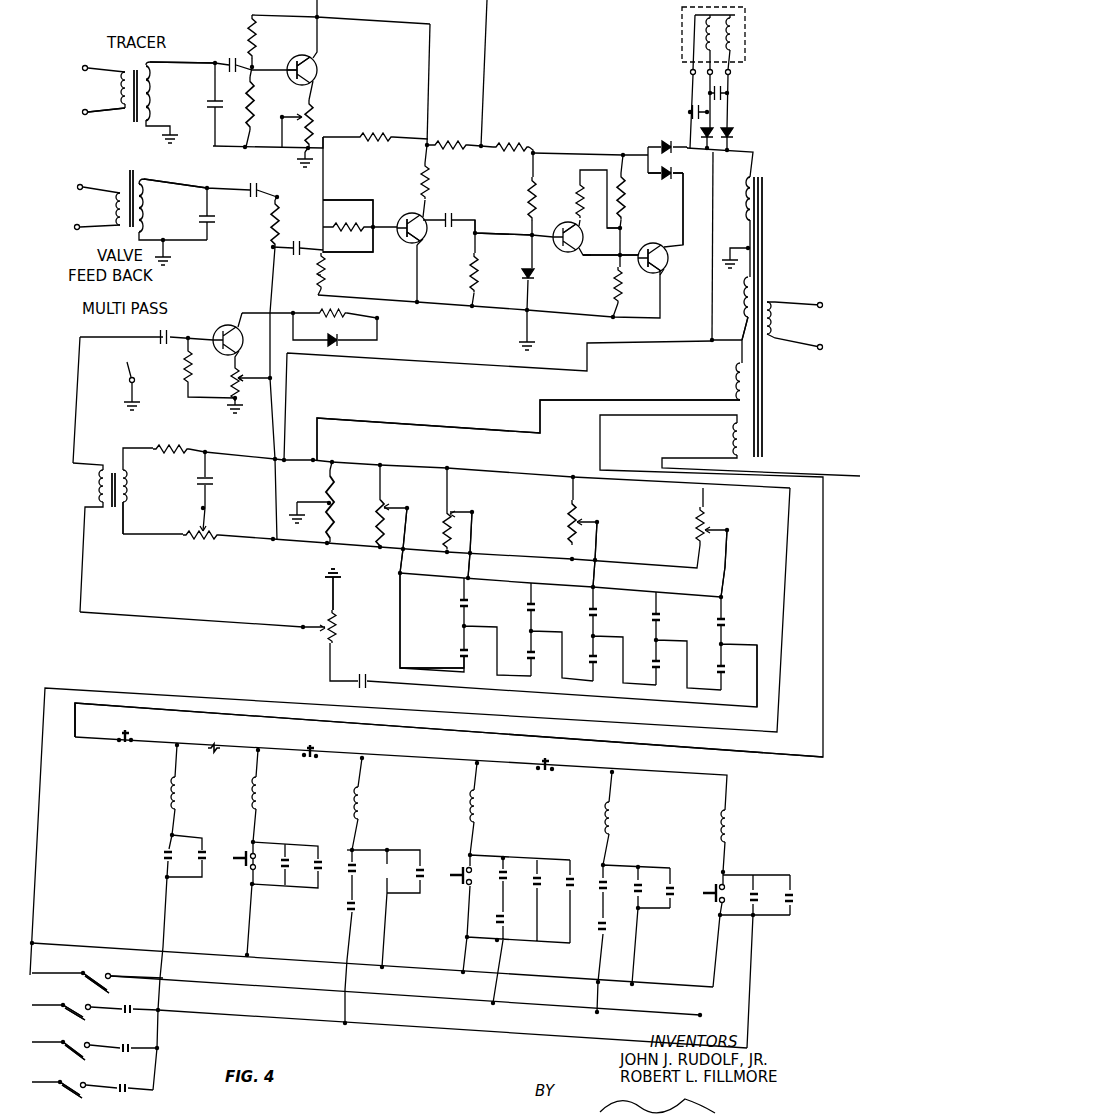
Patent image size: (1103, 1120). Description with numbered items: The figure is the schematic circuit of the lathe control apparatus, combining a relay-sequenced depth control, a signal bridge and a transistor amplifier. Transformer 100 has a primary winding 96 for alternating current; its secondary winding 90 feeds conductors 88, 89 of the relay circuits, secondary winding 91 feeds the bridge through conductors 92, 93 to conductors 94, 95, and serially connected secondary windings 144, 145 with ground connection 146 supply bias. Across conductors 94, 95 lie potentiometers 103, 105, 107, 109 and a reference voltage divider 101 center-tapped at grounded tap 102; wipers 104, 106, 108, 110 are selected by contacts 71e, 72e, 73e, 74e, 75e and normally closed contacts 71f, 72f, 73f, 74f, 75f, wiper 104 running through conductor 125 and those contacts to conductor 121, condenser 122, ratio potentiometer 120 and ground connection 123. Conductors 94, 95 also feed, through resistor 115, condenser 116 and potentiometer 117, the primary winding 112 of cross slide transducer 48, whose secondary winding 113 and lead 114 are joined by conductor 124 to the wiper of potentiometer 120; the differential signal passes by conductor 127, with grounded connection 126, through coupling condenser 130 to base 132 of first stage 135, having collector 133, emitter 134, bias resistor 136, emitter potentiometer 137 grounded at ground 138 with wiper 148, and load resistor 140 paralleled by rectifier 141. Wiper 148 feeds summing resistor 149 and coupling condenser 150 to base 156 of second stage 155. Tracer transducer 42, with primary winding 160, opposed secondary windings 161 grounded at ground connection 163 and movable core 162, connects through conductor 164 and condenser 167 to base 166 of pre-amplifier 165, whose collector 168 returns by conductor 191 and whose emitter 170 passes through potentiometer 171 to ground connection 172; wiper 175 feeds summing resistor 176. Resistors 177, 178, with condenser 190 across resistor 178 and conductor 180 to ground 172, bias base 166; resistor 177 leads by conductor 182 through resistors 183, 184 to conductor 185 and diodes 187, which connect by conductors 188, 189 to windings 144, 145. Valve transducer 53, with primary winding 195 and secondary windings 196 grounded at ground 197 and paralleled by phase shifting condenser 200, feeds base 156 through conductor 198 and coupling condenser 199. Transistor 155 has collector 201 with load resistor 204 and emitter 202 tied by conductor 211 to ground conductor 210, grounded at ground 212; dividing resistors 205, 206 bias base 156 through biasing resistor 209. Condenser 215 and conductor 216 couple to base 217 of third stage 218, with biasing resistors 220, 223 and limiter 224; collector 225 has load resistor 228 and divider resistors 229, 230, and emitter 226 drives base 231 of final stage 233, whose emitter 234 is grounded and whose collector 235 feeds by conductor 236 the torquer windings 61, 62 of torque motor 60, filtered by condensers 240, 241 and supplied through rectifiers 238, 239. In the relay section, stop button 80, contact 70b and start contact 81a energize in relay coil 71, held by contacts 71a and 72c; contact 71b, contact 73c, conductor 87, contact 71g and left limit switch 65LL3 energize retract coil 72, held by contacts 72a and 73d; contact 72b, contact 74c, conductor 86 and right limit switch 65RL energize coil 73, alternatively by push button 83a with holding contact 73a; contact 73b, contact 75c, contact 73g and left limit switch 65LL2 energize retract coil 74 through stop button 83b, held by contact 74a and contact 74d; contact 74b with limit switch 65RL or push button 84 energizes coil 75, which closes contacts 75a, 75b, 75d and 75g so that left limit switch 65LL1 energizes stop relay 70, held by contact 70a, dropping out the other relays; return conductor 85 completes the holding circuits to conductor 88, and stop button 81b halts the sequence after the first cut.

The tracer transducer 42 is at (129, 63).
The primary energizing winding 160 is at (120, 90).
The movable core member 162 is at (130, 116).
The serially opposed secondary windings 161 is at (150, 90).
The ground connection 163 is at (175, 138).
The conductor 164 is at (180, 66).
The capacitor 167 is at (228, 58).
The condenser 190 is at (218, 100).
The resistor 177 is at (250, 30).
The bias resistor 178 is at (255, 92).
The pre-amplifying stage transistor 165 is at (303, 49).
The base 166 is at (292, 62).
The collector 168 is at (312, 62).
The emitter 170 is at (314, 76).
The bias ratio potentiometer 171 is at (315, 104).
The wiper 175 is at (295, 116).
The conductor 180 is at (262, 150).
The ground connection 172 is at (305, 160).
The conductor 182 is at (432, 74).
The conductor 191 is at (485, 94).
The valve transducer 53 is at (120, 178).
The primary winding 195 is at (115, 210).
The serially opposed secondary windings 196 is at (150, 208).
The conductor 198 is at (212, 186).
The coupling condenser 199 is at (247, 191).
The phase shifting condenser 200 is at (215, 218).
The ground connection 197 is at (172, 258).
The summing resistor 176 is at (271, 232).
The coupling condenser 150 is at (297, 243).
The summing resistor 149 is at (318, 272).
The voltage dividing resistor 206 is at (328, 280).
The biasing resistor 209 is at (355, 222).
The base 156 is at (368, 230).
The second amplifying stage transistor 155 is at (409, 209).
The collector 201 is at (422, 228).
The emitter 202 is at (421, 243).
The conductor 211 is at (415, 283).
The ground conductor 210 is at (435, 303).
The voltage dividing resistor 205 is at (375, 145).
The load resistor 204 is at (430, 180).
The voltage dropping resistor 183 is at (445, 140).
The voltage dropping resistor 184 is at (517, 143).
The conductor 185 is at (583, 150).
The coupling condenser 215 is at (456, 215).
The conductor 216 is at (512, 234).
The limiter or half wave rectifier 224 is at (480, 275).
The biasing resistor 223 is at (528, 180).
The biasing resistor 220 is at (525, 280).
The third amplifying stage 218 is at (573, 261).
The base 217 is at (568, 222).
The load resistor 228 is at (578, 192).
The collector 225 is at (580, 245).
The emitter 226 is at (580, 257).
The voltage dividing resistor 229 is at (630, 192).
The base 231 is at (646, 222).
The final amplifying stage transistor 233 is at (661, 241).
The collector 235 is at (666, 258).
The emitter 234 is at (665, 272).
The voltage dividing resistor 230 is at (623, 288).
The conductor 236 is at (685, 190).
The pair of diodes 187 is at (668, 140).
The conductor 188 is at (755, 152).
The conductor 189 is at (712, 230).
The relay 60 is at (750, 28).
The torquer winding 61 is at (706, 38).
The torquer winding 62 is at (735, 40).
The filter condenser 240 is at (727, 92).
The filter condenser 241 is at (690, 110).
The rectifier 238 is at (712, 130).
The rectifier 239 is at (732, 130).
The secondary winding 145 is at (765, 200).
The ground connection 146 is at (728, 248).
The secondary winding 144 is at (745, 305).
The transformer 100 is at (806, 293).
The primary winding 96 is at (778, 318).
The secondary winding 91 is at (735, 378).
The secondary winding 90 is at (732, 440).
The conductor 92 is at (492, 363).
The ground 212 is at (540, 348).
The conductor 93 is at (492, 430).
The load resistor 140 is at (345, 318).
The rectifier 141 is at (340, 344).
The collector 133 is at (265, 323).
The first transistor amplifying stage 135 is at (234, 320).
The coupling condenser 130 is at (158, 332).
The base 132 is at (212, 338).
The conductor 127 is at (80, 372).
The grounded connection 126 is at (121, 379).
The bias resistor 136 is at (185, 366).
The emitter 134 is at (230, 360).
The emitter-resistor potentiometer 137 is at (233, 382).
The ground 138 is at (233, 410).
The wiper 148 is at (270, 378).
The cross slide transducer 48 is at (110, 461).
The secondary winding 113 is at (98, 487).
The primary winding 112 is at (130, 490).
The lead 114 is at (115, 528).
The resistor 115 is at (160, 452).
The condenser 116 is at (215, 480).
The adjustable potentiometer 117 is at (195, 535).
The conductor 94 is at (265, 455).
The conductor 95 is at (262, 537).
The reference voltage divider 101 is at (369, 493).
The center tap 102 is at (328, 500).
The potentiometer 103 is at (386, 506).
The wiper 104 is at (387, 512).
The potentiometer 105 is at (452, 511).
The wiper 106 is at (455, 517).
The potentiometer 107 is at (577, 518).
The wiper 108 is at (582, 525).
The potentiometer 109 is at (706, 527).
The wiper 110 is at (710, 533).
The ground connection 123 is at (345, 572).
The ratio potentiometer 120 is at (344, 628).
The conductor 124 is at (197, 620).
The condenser 122 is at (362, 672).
The conductor 125 is at (403, 643).
The conductor 121 is at (708, 708).
The relay contact 71e is at (470, 605).
The relay contact 72e is at (537, 609).
The relay contact 73e is at (599, 613).
The relay contact 74e is at (662, 618).
The relay contact 75e is at (727, 623).
The normally closed relay contact 71f is at (466, 655).
The normally closed relay contact 72f is at (534, 657).
The normally closed relay contact 73f is at (597, 661).
The normally closed relay contact 74f is at (660, 665).
The normally closed relay contact 75f is at (725, 670).
The conductor 88 is at (42, 845).
The conductor 89 is at (78, 718).
The stop button 80 is at (134, 736).
The normally closed relay contact 70b is at (222, 746).
The normally closed push button contact 81b is at (318, 752).
The normally closed push button contact 83b is at (552, 767).
The stop relay coil 70 is at (180, 792).
The in relay coil 71 is at (262, 797).
The retract relay coil 72 is at (363, 805).
The in relay coil 73 is at (480, 810).
The retract relay coil 74 is at (615, 822).
The in relay coil 75 is at (732, 830).
The relay contact 75d is at (164, 857).
The holding contact 70a is at (205, 860).
The momentary start switch contact 81a is at (242, 855).
The holding contact 71a is at (282, 862).
The normally closed relay contact 73c is at (318, 870).
The relay contact 72c is at (350, 851).
The holding contact 72a is at (354, 872).
The relay contact 73d is at (423, 878).
The relay contact 71b is at (347, 910).
The momentary push button contact 83a is at (460, 868).
The normally closed relay contact 74c is at (505, 870).
The holding contact 73a is at (540, 884).
The relay contact 74d is at (571, 876).
The relay contact 72b is at (503, 918).
The relay contact 73b is at (600, 930).
The normally closed relay contact 75c is at (606, 883).
The holding contact 74a is at (640, 894).
The push button 84 is at (710, 888).
The relay contact 74b is at (752, 898).
The relay contact 75b is at (672, 895).
The relay contact 75a is at (791, 905).
The return conductor 85 is at (280, 967).
The conductor 86 is at (285, 999).
The conductor 87 is at (284, 1030).
The right limit switch 65RL is at (92, 970).
The left limit switch 65LL1 is at (88, 1005).
The left limit switch 65LL2 is at (86, 1043).
The left limit switch 65LL3 is at (83, 1083).
The relay contact 75g is at (122, 1006).
The relay contact 73g is at (120, 1045).
The relay contact 71g is at (118, 1086).